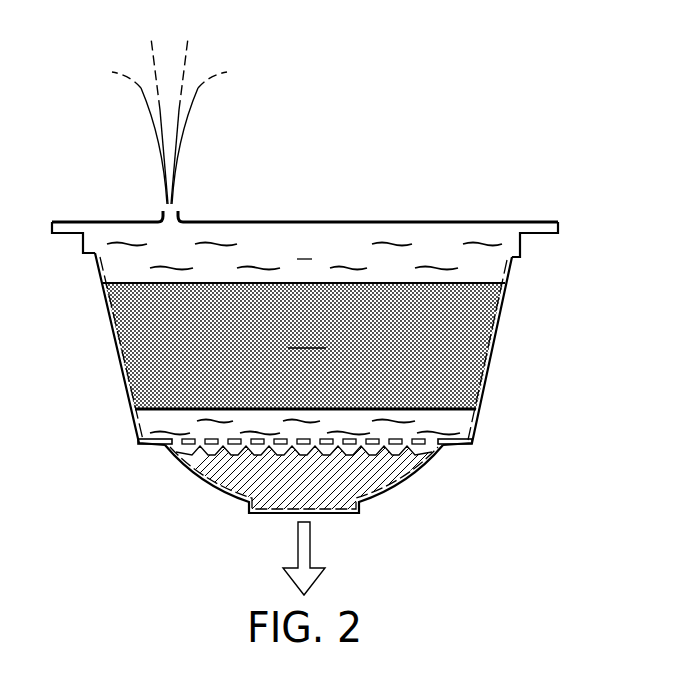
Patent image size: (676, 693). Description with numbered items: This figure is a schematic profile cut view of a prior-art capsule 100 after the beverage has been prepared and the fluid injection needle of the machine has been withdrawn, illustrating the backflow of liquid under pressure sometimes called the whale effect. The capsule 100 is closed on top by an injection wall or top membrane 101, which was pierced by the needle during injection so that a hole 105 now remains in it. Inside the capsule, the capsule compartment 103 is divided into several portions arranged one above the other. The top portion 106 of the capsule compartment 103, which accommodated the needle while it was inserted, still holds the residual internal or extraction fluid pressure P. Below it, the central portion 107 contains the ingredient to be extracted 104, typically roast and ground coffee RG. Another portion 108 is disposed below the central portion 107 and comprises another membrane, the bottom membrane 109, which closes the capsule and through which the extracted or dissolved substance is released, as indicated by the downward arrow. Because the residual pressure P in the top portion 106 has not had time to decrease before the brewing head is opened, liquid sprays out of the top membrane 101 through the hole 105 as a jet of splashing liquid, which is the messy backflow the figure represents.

The capsule 100 is at (293, 316).
The top membrane 101 is at (342, 222).
The capsule compartment 103 is at (147, 422).
The ingredients 104 is at (414, 283).
The hole 105 is at (172, 210).
The top portion 106 is at (250, 233).
The central portion 107 is at (477, 351).
The bottom portion 108 is at (462, 423).
The bottom membrane 109 is at (267, 512).